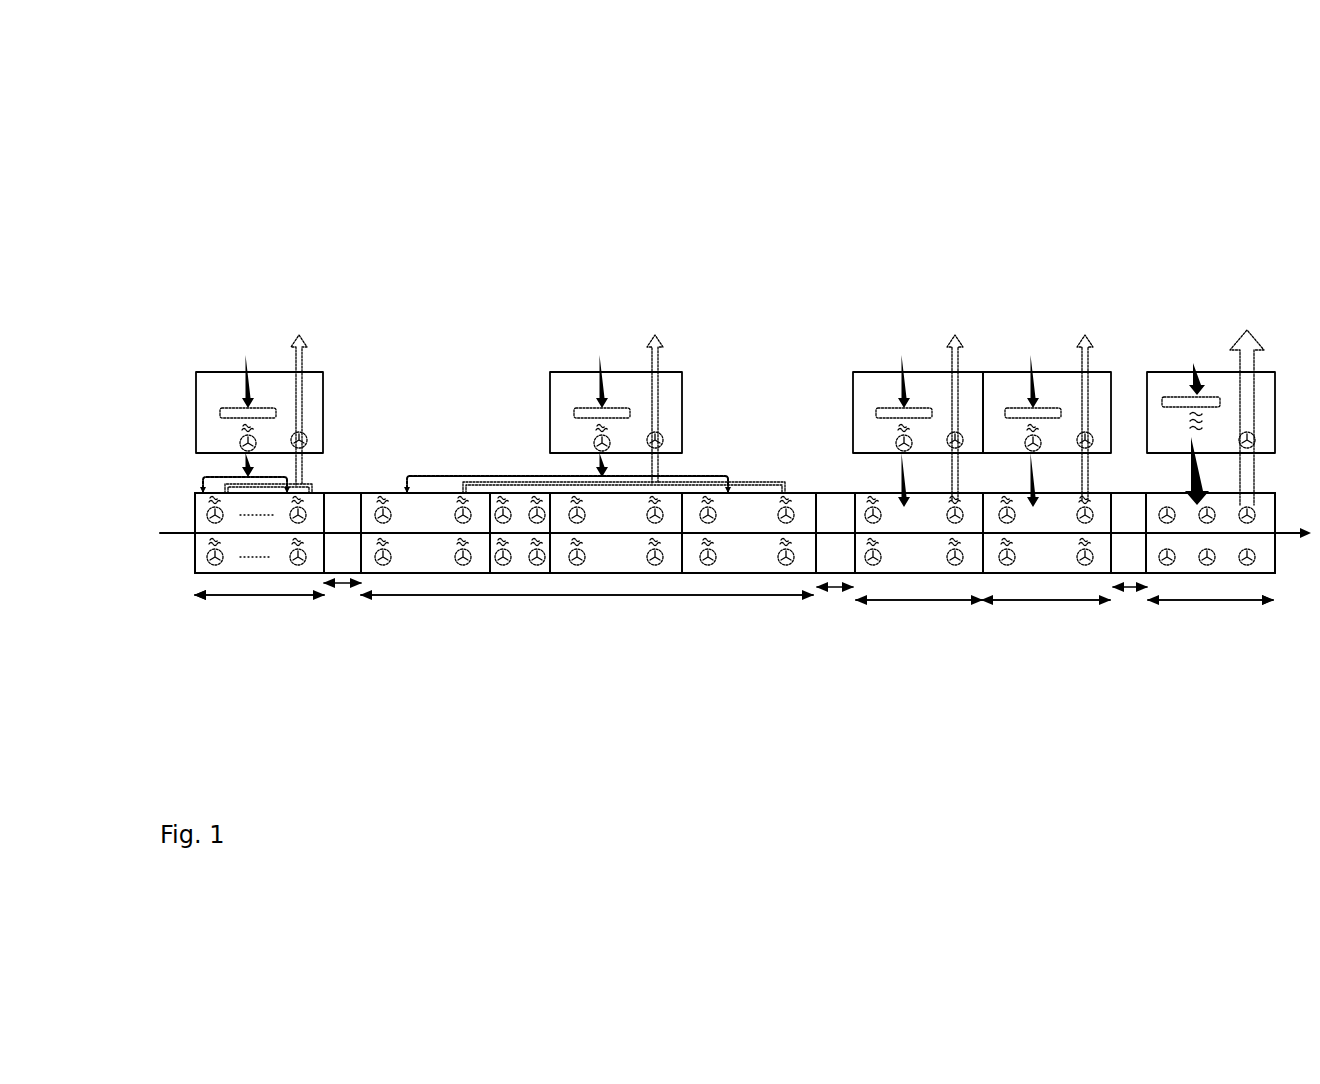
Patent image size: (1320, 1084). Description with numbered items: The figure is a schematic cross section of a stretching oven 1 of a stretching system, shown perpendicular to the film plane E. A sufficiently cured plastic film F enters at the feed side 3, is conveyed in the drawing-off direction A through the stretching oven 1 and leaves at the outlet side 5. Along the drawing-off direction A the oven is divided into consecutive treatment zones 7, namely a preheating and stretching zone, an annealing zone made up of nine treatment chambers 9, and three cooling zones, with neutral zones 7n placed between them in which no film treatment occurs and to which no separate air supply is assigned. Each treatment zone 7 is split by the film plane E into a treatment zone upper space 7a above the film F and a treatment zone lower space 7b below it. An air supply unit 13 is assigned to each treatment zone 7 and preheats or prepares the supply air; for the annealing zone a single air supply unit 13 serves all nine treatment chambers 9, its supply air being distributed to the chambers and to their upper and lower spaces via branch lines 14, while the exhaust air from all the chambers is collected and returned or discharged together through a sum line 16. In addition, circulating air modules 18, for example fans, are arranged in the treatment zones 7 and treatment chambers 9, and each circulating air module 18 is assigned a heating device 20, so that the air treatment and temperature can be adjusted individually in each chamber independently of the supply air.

The stretching oven 1 is at (928, 233).
The feed side 3 is at (183, 543).
The outlet side 5 is at (1290, 548).
The treatment zone 7 is at (263, 607).
The treatment zone upper space 7a is at (735, 512).
The treatment zone lower space 7b is at (627, 623).
The neutral zone 7n is at (347, 507).
The treatment chamber 9 is at (423, 507).
The air supply unit 13 is at (220, 385).
The branch line 14 is at (473, 477).
The sum line 16 is at (510, 480).
The circulating air module 18 is at (217, 518).
The heating device 20 is at (215, 510).
The drawing-off direction A is at (1308, 530).
The film plane E is at (830, 530).
The film F is at (757, 527).